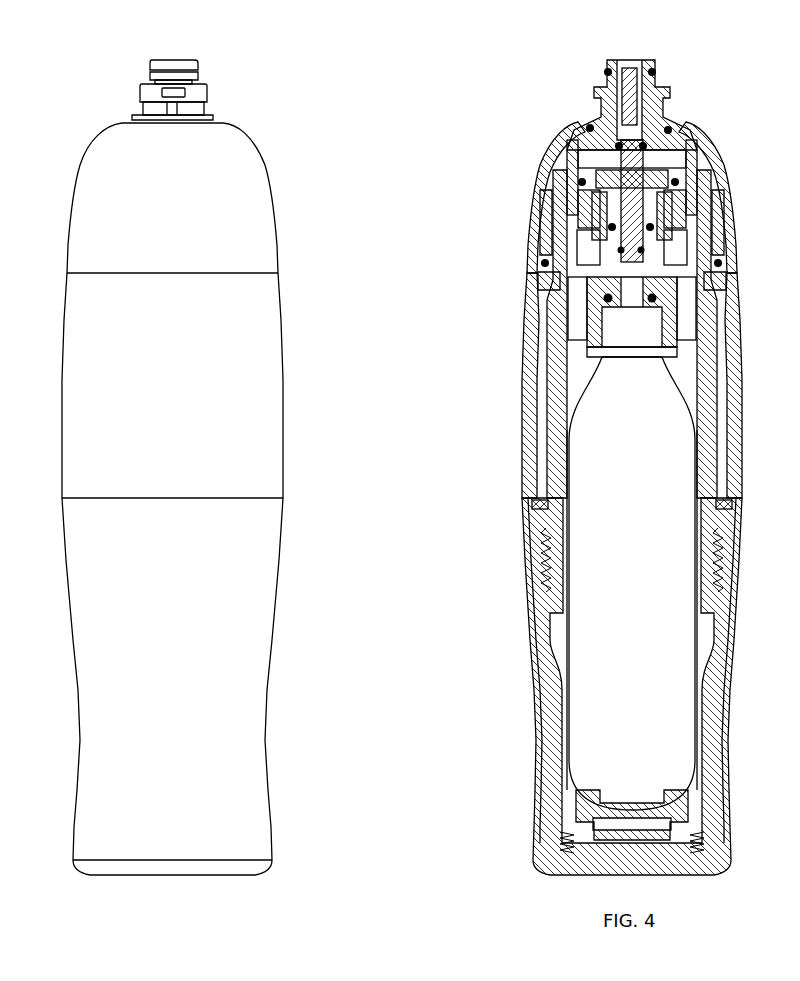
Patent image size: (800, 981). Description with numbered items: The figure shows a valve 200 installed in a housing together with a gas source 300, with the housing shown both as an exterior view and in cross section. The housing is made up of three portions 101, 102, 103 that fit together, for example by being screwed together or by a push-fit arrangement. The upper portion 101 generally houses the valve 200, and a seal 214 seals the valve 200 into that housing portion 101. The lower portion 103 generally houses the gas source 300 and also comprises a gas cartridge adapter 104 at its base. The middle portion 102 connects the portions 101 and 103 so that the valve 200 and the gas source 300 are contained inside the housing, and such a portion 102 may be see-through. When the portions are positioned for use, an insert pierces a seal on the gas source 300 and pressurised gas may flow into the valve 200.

The valve 200 is at (595, 92).
The seal 214 is at (668, 130).
The portion 101 is at (538, 190).
The portion 102 is at (526, 391).
The portion 103 is at (538, 685).
The gas source 300 is at (610, 747).
The gas cartridge adapter 104 is at (583, 806).